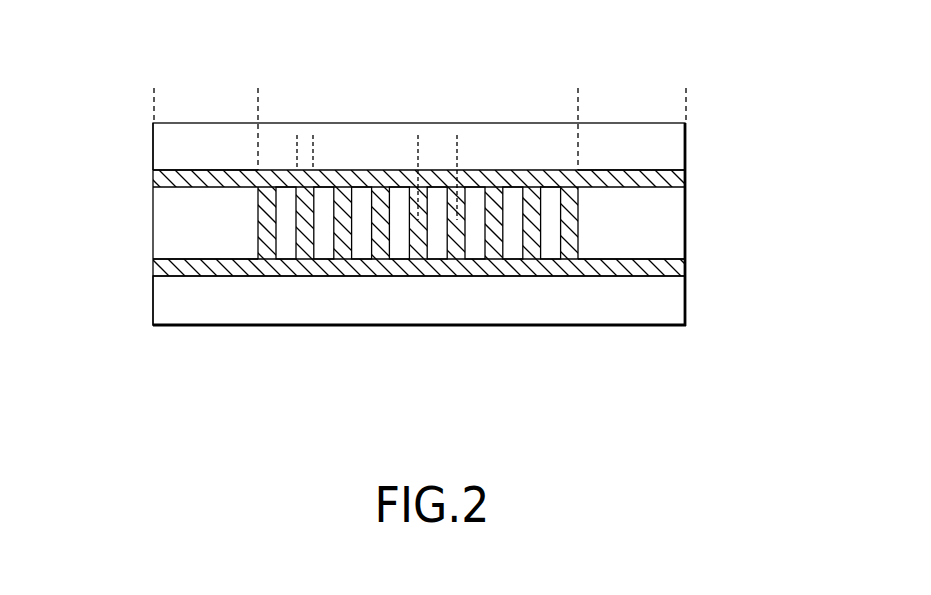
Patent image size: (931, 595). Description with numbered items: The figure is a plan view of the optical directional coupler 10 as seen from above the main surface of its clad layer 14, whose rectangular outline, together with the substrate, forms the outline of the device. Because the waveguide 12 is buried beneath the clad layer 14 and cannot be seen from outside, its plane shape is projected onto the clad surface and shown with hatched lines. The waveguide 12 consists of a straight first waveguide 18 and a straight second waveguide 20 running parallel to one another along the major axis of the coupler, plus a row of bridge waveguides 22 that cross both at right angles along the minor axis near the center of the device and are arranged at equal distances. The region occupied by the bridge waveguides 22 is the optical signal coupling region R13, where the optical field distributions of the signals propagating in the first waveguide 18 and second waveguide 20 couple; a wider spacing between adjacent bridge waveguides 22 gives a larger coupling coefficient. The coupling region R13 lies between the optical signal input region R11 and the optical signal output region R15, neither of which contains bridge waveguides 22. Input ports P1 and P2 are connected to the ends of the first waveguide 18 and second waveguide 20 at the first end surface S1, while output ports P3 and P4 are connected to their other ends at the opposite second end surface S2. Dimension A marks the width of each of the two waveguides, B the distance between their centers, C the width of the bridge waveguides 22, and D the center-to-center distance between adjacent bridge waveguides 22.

The optical directional coupler 10 is at (717, 61).
The waveguide 12 is at (308, 373).
The clad layer 14 is at (205, 315).
The first waveguide 18 is at (343, 170).
The second waveguide 20 is at (475, 268).
The bridge waveguides 22 is at (417, 232).
The optical signal input region R11 is at (154, 88).
The optical signal coupling region R13 is at (258, 88).
The optical signal output region R15 is at (579, 88).
The first end surface S1 is at (142, 139).
The second end surface S2 is at (697, 142).
The input port P1 is at (153, 180).
The input port P2 is at (153, 268).
The output port P3 is at (685, 179).
The output port P4 is at (685, 268).
The width of the first and second waveguides A is at (614, 132).
The distance between the centers of the first and second waveguides B is at (652, 194).
The width of the bridge waveguides C is at (268, 151).
The distance between the centers of the bridge waveguides D is at (487, 151).